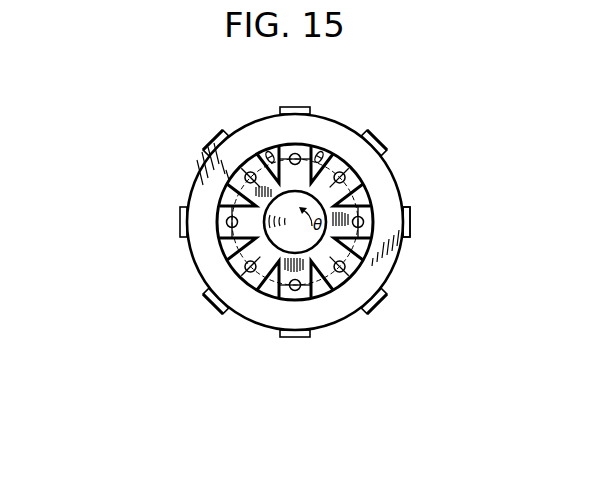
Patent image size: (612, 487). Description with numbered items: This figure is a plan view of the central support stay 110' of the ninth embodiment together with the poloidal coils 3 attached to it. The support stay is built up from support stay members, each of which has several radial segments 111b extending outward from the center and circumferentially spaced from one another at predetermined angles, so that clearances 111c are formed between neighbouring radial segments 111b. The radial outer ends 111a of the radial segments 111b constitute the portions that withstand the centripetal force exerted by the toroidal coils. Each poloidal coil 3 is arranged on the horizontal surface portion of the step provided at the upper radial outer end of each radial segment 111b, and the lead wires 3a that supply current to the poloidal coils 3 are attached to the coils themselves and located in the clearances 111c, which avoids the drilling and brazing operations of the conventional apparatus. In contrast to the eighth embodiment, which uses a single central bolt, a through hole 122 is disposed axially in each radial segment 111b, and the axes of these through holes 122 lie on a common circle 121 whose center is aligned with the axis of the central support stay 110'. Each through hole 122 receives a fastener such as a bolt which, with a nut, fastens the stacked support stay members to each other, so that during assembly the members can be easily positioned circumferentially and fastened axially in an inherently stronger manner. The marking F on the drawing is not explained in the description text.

The central support stay 110' is at (242, 222).
The poloidal coil 3 is at (386, 256).
The lead wire 3a is at (316, 150).
The radial outer end 111a is at (411, 226).
The radial segment 111b is at (358, 188).
The clearance 111c is at (321, 289).
The common circle 121 is at (226, 251).
The through hole 122 is at (252, 282).
The flange F is at (379, 303).